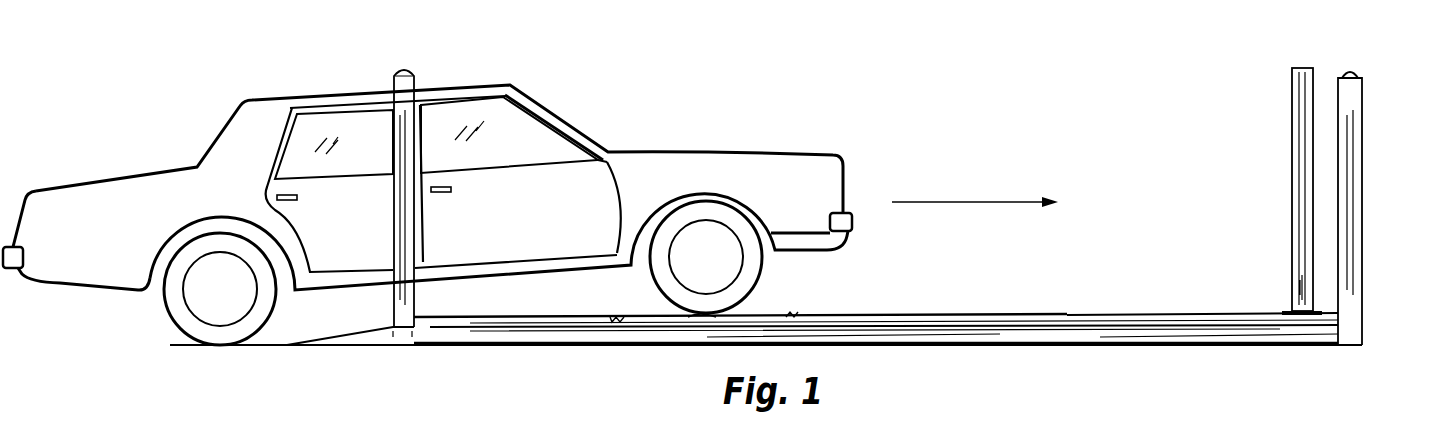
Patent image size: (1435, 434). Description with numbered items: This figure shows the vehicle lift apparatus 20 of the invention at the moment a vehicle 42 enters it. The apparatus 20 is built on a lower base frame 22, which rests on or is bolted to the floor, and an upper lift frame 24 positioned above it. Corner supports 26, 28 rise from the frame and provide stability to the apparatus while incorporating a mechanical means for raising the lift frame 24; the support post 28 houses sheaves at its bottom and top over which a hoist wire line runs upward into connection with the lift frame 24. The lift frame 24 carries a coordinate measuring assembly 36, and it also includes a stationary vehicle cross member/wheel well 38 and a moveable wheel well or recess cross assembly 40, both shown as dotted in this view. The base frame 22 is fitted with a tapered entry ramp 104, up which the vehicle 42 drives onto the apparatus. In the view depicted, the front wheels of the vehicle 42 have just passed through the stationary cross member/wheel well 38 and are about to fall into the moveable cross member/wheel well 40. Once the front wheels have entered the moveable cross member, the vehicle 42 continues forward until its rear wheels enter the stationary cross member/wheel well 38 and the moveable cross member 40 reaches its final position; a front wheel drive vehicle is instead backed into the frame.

The apparatus 20 is at (1224, 220).
The lower base frame 22 is at (1050, 341).
The upper lift frame 24 is at (1036, 313).
The corner support 26 is at (1355, 103).
The corner support 28 is at (400, 83).
The coordinate measuring assembly 36 is at (1269, 88).
The stationary vehicle cross member/wheel well 38 is at (623, 321).
The moveable wheel well or recess cross assembly 40 is at (792, 318).
The vehicle 42 is at (654, 152).
The tapered entry ramp 104 is at (343, 346).